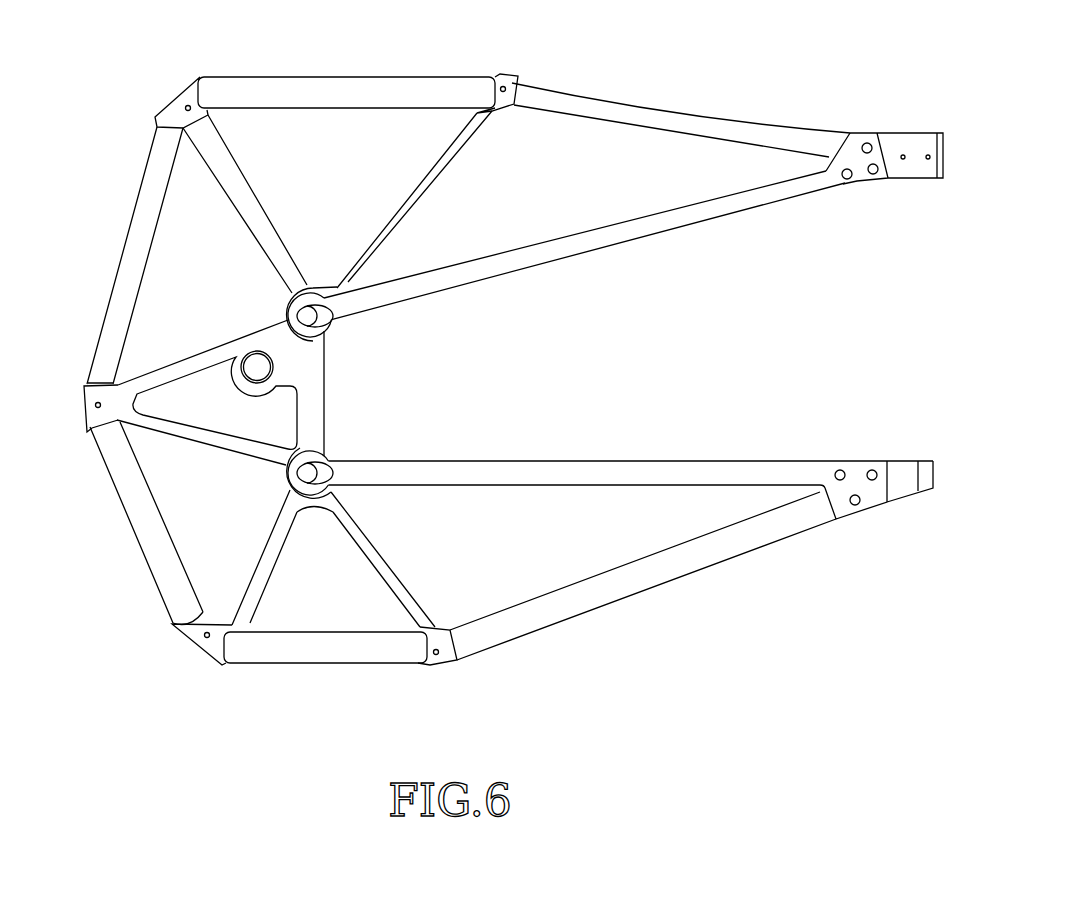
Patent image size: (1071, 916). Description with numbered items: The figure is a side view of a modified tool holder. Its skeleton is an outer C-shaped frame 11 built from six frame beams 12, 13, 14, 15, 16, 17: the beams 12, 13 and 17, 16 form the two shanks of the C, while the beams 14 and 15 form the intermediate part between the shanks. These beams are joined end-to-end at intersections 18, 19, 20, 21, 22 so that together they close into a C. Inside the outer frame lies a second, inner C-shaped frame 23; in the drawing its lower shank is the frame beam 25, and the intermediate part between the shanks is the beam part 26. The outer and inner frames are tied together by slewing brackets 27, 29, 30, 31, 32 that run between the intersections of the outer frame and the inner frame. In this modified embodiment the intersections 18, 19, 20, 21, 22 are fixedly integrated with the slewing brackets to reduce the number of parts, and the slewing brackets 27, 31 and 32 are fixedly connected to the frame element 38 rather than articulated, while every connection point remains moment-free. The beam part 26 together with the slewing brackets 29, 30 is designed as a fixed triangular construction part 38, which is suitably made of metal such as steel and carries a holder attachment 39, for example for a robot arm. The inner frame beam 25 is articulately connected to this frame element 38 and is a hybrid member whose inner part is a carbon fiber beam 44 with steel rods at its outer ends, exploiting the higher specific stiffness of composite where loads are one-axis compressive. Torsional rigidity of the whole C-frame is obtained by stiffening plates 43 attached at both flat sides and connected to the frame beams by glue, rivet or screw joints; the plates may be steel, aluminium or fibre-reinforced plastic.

The outer C-shaped frame 11 is at (722, 109).
The frame beam 12 is at (640, 582).
The frame beam 13 is at (323, 650).
The frame beam 14 is at (164, 567).
The frame beam 15 is at (140, 238).
The frame beam 16 is at (308, 92).
The frame beam 17 is at (648, 113).
The intersection 18 is at (506, 78).
The intersection 19 is at (178, 110).
The intersection 20 is at (85, 413).
The intersection 21 is at (207, 649).
The intersection 22 is at (427, 667).
The inner C-shaped frame 23 is at (746, 453).
The frame beam 25 is at (640, 473).
The beam part 26 is at (312, 405).
The slewing bracket 27 is at (432, 177).
The slewing bracket 29 is at (182, 368).
The slewing bracket 30 is at (225, 450).
The slewing bracket 31 is at (250, 570).
The slewing bracket 32 is at (393, 580).
The fixed triangular construction part 38 is at (168, 447).
The holder attachment 39 is at (263, 339).
The stiffening plate 43 is at (381, 169).
The carbon fiber beam 44 is at (558, 257).